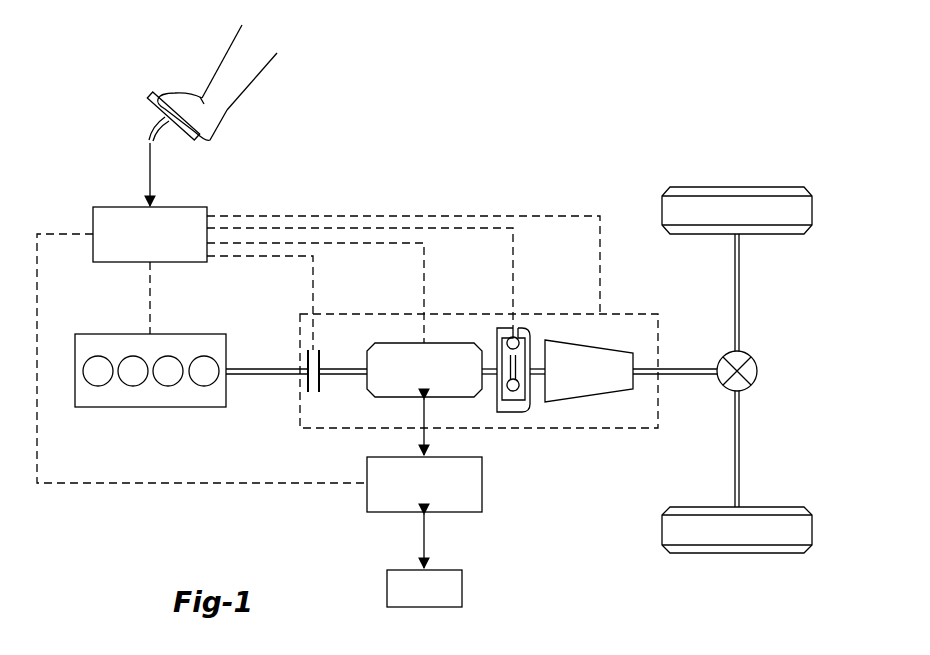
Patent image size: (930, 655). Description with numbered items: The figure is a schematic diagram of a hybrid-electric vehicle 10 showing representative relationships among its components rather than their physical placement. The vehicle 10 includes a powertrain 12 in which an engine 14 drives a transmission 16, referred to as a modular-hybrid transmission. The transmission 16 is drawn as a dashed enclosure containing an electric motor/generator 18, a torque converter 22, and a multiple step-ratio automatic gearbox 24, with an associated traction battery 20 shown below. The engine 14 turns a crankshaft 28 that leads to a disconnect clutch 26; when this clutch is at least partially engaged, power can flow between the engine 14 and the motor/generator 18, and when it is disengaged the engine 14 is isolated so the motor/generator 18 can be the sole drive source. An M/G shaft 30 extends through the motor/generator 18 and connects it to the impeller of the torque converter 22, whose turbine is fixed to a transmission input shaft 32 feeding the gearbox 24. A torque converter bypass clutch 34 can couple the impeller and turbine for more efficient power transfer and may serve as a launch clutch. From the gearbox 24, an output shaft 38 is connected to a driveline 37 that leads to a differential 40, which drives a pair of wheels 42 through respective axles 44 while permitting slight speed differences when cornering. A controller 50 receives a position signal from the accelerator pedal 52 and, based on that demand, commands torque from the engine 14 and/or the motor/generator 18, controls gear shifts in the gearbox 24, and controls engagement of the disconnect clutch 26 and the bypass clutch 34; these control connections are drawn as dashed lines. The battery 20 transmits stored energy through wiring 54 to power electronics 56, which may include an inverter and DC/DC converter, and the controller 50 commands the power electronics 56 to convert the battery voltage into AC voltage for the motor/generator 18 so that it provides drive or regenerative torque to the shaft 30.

The hybrid-electric vehicle 10 is at (614, 127).
The powertrain 12 is at (256, 519).
The engine 14 is at (91, 334).
The transmission 16 is at (458, 312).
The electric motor/generator 18 is at (405, 343).
The traction battery 20 is at (387, 590).
The torque converter 22 is at (508, 413).
The gearbox 24 is at (585, 396).
The disconnect clutch 26 is at (309, 392).
The crankshaft 28 is at (285, 368).
The M/G shaft 30 is at (348, 368).
The transmission input shaft 32 is at (537, 365).
The torque converter bypass clutch 34 is at (514, 331).
The driveline 37 is at (688, 366).
The output shaft 38 is at (645, 366).
The differential 40 is at (757, 372).
The wheels 42 is at (709, 187).
The axles 44 is at (740, 291).
The controller 50 is at (106, 207).
The accelerator pedal 52 is at (146, 109).
The wiring 54 is at (422, 542).
The power electronics 56 is at (482, 484).